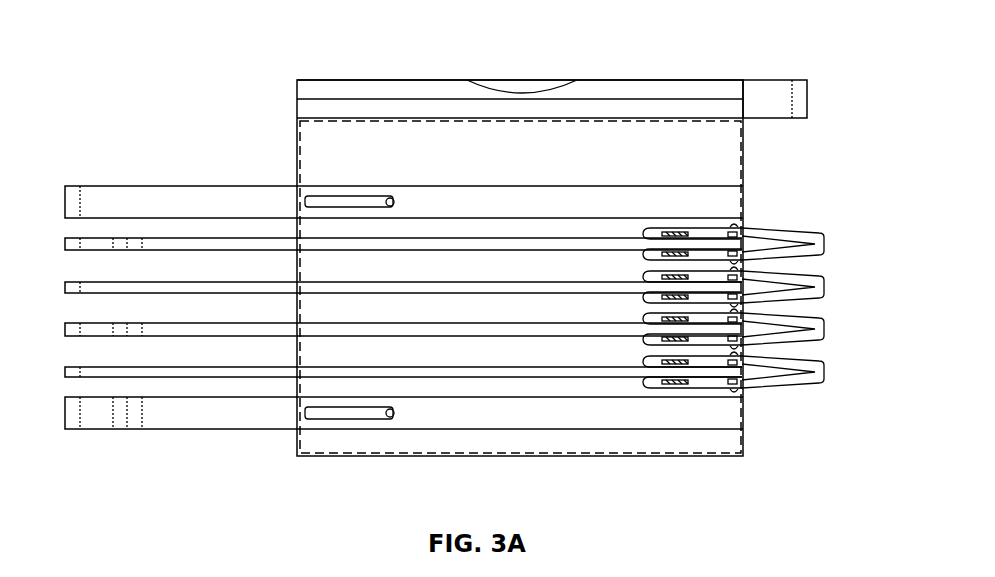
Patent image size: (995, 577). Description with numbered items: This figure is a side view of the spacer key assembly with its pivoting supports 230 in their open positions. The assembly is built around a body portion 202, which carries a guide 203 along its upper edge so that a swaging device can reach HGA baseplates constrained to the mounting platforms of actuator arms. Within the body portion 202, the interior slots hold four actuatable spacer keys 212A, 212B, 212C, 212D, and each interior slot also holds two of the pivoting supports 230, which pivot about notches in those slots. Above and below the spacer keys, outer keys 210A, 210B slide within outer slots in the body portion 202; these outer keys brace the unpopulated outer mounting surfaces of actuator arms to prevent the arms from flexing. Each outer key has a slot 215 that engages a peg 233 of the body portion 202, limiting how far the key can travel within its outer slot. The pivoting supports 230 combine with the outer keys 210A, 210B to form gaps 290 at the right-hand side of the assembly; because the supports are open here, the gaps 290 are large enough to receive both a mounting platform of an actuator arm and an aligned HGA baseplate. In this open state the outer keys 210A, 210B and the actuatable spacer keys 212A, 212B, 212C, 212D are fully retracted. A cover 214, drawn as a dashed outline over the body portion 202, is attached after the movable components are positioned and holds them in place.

The body portion 202 is at (520, 160).
The guide 203 is at (788, 56).
The outer key 210A is at (210, 213).
The outer key 210B is at (160, 423).
The actuatable spacer key 212A is at (73, 243).
The actuatable spacer key 212B is at (128, 285).
The actuatable spacer key 212C is at (157, 332).
The actuatable spacer key 212D is at (75, 372).
The cover 214 is at (300, 130).
The slot 215 is at (305, 200).
The pivoting supports 230 is at (773, 422).
The peg 233 is at (393, 413).
The gaps 290 is at (822, 390).